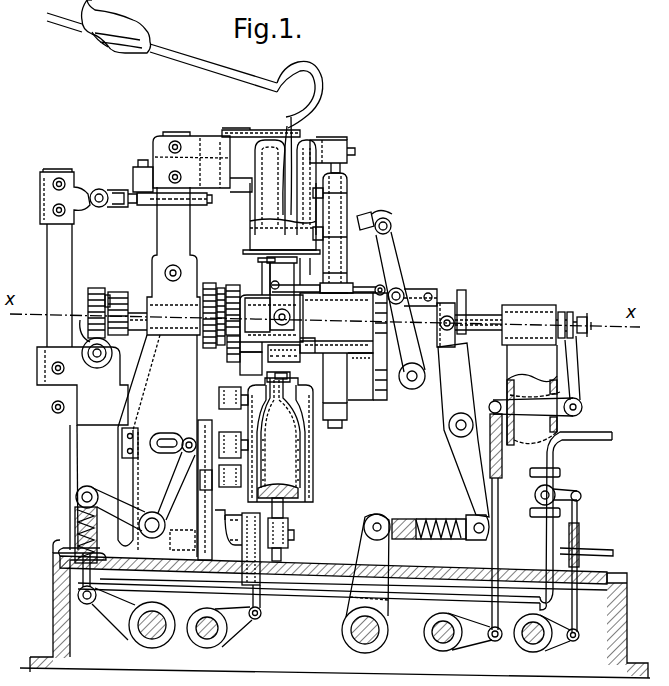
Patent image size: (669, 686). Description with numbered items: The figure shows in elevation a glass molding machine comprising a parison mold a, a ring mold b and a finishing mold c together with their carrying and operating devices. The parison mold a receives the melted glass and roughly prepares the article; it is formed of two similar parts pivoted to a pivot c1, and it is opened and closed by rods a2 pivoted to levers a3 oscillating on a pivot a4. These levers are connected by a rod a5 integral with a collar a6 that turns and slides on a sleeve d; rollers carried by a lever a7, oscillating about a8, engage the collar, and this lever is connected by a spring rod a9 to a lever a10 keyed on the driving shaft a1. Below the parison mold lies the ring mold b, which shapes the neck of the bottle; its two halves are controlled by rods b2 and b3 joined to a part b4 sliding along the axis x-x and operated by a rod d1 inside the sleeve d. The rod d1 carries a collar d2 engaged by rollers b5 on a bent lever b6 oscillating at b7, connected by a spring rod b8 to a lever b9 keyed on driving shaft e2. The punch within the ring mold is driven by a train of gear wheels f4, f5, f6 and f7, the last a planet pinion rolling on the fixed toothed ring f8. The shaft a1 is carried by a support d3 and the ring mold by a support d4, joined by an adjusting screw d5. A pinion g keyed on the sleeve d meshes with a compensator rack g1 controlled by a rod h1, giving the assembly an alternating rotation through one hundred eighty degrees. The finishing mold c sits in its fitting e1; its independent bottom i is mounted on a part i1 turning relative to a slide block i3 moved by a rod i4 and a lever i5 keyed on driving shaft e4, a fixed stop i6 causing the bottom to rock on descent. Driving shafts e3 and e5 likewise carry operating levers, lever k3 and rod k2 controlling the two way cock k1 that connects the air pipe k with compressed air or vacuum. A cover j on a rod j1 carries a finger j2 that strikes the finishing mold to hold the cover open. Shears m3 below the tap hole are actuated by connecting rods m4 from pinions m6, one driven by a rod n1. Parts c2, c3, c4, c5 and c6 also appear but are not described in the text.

The parison mold a is at (262, 205).
The driving shaft a1 is at (350, 190).
The rods a2 is at (378, 220).
The levers a3 is at (391, 255).
The pivot a4 is at (410, 388).
The rod a5 is at (406, 296).
The collar a6 is at (460, 292).
The lever a7 is at (458, 382).
The pivot a8 is at (450, 428).
The spring rod a9 is at (426, 520).
The lever a10 is at (383, 552).
The ring mold b is at (262, 262).
The rod b2 is at (305, 278).
The rod b3 is at (338, 288).
The sliding part b4 is at (378, 289).
The rollers b5 is at (567, 310).
The bent lever b6 is at (579, 372).
The pivot b7 is at (582, 409).
The spring rod b8 is at (501, 462).
The lever b9 is at (466, 645).
The finishing mold c is at (302, 453).
The pivot c1 is at (312, 478).
The slide block c2 is at (220, 398).
The slide bar c3 is at (206, 480).
The bell crank c4 is at (170, 490).
The spring c5 is at (76, 531).
The cam lever c6 is at (104, 618).
The sleeve d is at (136, 332).
The rod d1 is at (493, 318).
The collar d2 is at (588, 318).
The support d3 is at (348, 340).
The support d4 is at (266, 283).
The screw d5 is at (313, 338).
The fitting e1 is at (366, 644).
The driving shaft e2 is at (440, 642).
The driving shaft e3 is at (152, 632).
The driving shaft e4 is at (207, 636).
The driving shaft e5 is at (524, 644).
The gear wheel f4 is at (255, 365).
The gear wheel f5 is at (227, 350).
The gear wheel f6 is at (230, 292).
The planet pinion f7 is at (200, 318).
The fixed toothed ring f8 is at (207, 288).
The pinion g is at (96, 290).
The compensator rack g1 is at (84, 343).
The rod h1 is at (95, 372).
The bottom i is at (288, 500).
The part i1 is at (290, 538).
The slide block i3 is at (280, 566).
The rod i4 is at (265, 607).
The lever i5 is at (238, 622).
The fixed stop i6 is at (285, 556).
The cover j is at (330, 137).
The rod j1 is at (343, 168).
The finger j2 is at (340, 420).
The pipe k is at (70, 456).
The two way cock k1 is at (534, 496).
The rod k2 is at (575, 603).
The lever k3 is at (563, 645).
The shears m3 is at (264, 130).
The connecting rods m4 is at (178, 205).
The pinions m6 is at (133, 187).
The rod n1 is at (100, 192).